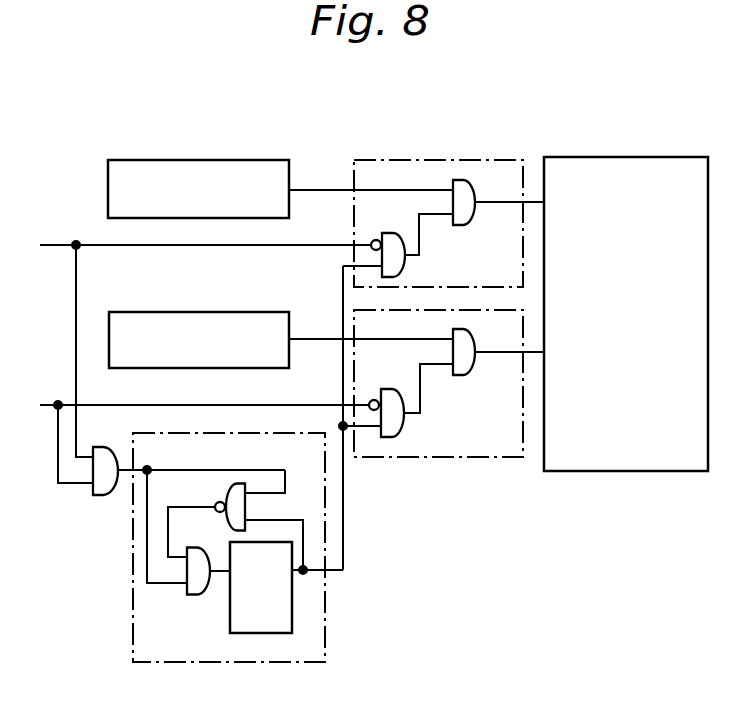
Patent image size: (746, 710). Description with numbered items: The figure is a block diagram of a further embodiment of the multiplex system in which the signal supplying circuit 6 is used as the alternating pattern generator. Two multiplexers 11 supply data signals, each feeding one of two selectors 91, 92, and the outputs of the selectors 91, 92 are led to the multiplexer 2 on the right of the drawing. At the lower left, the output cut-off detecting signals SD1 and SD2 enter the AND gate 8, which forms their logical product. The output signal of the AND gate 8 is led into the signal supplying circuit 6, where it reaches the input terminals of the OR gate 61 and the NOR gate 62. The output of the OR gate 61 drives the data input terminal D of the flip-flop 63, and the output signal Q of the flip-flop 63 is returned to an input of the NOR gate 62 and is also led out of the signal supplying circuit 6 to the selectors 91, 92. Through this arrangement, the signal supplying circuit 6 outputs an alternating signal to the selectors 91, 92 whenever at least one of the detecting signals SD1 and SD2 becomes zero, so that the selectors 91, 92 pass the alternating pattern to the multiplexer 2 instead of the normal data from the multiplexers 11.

The multiplexer 2 is at (603, 157).
The multiplexer 11 is at (185, 160).
The selector 91 is at (415, 160).
The selector 92 is at (423, 460).
The AND gate 8 is at (103, 447).
The signal supplying circuit 6 is at (130, 545).
The OR gate 61 is at (197, 595).
The NOR gate 62 is at (228, 488).
The flip-flop 63 is at (255, 633).